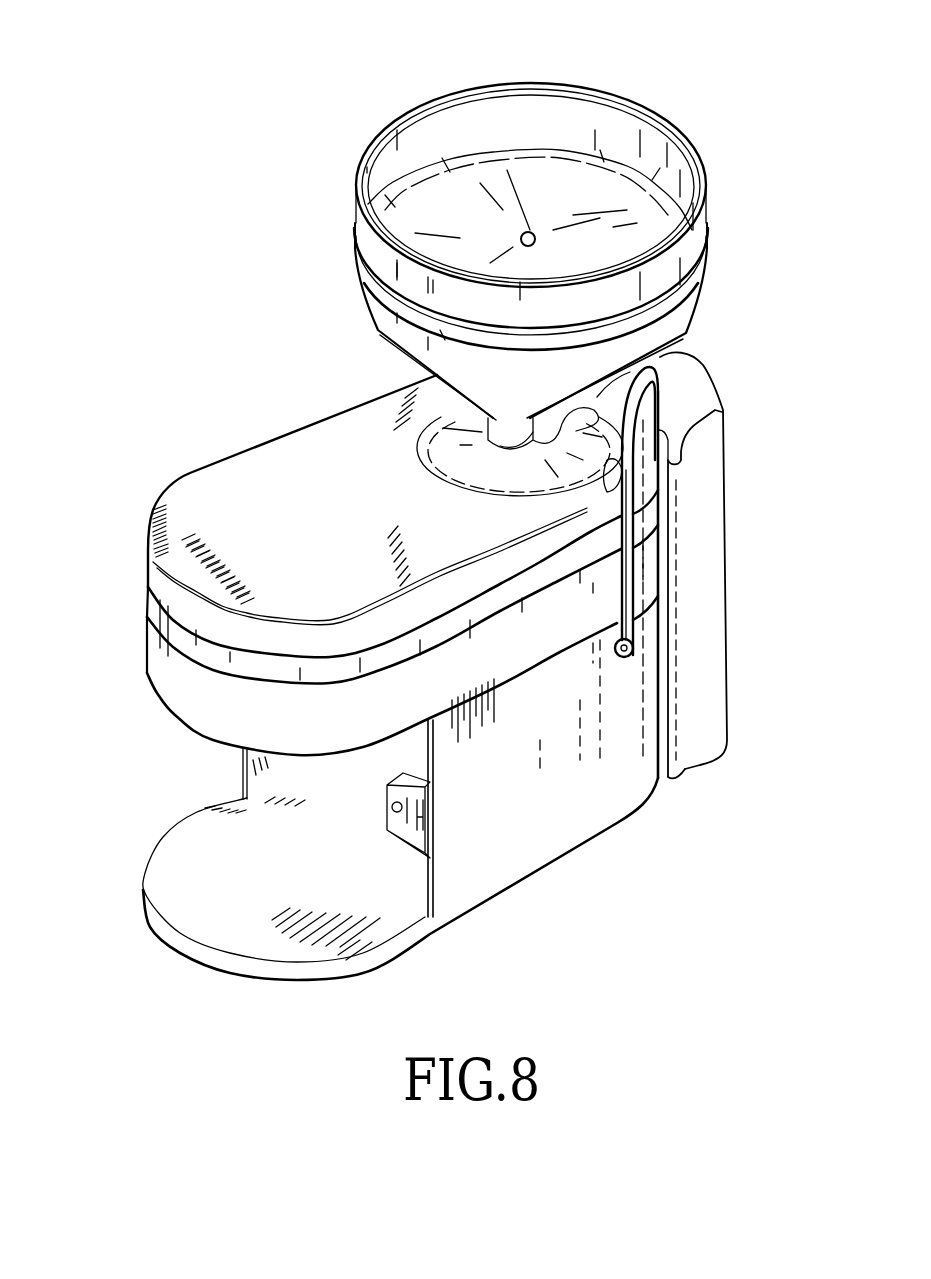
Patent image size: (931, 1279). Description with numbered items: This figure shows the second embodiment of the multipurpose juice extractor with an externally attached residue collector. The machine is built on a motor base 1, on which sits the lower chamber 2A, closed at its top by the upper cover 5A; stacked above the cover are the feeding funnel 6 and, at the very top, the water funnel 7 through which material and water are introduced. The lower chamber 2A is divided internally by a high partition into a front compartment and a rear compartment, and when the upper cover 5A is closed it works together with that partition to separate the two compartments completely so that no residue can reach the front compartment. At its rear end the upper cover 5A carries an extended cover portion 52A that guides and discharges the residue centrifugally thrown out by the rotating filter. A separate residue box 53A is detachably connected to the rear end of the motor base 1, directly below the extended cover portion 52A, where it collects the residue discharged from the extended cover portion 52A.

The motor base 1 is at (517, 853).
The lower chamber 2A is at (165, 662).
The upper cover 5A is at (307, 440).
The feeding funnel 6 is at (387, 317).
The water funnel 7 is at (502, 108).
The extended cover portion 52A is at (687, 380).
The residue box 53A is at (703, 545).